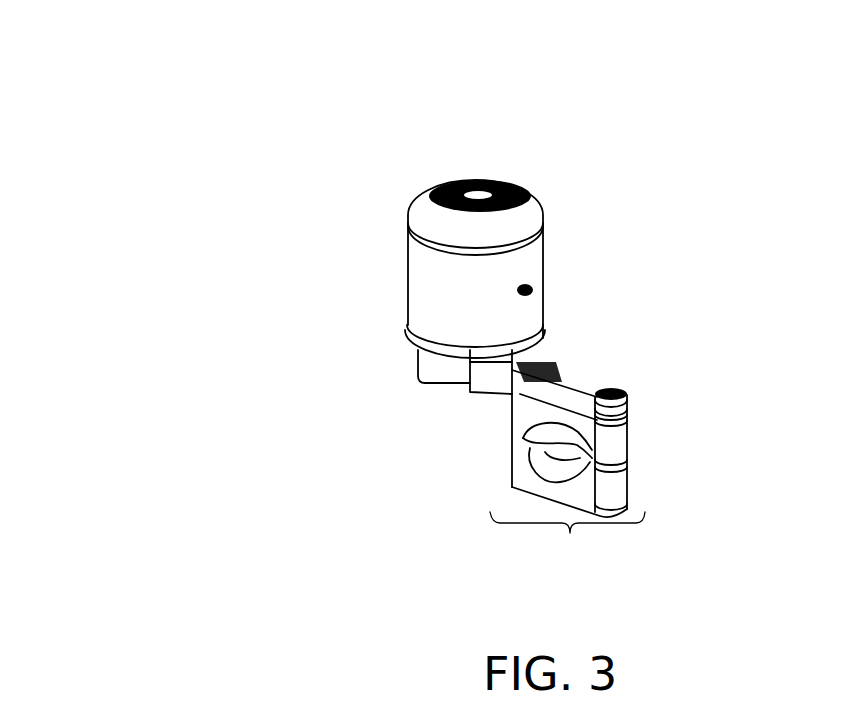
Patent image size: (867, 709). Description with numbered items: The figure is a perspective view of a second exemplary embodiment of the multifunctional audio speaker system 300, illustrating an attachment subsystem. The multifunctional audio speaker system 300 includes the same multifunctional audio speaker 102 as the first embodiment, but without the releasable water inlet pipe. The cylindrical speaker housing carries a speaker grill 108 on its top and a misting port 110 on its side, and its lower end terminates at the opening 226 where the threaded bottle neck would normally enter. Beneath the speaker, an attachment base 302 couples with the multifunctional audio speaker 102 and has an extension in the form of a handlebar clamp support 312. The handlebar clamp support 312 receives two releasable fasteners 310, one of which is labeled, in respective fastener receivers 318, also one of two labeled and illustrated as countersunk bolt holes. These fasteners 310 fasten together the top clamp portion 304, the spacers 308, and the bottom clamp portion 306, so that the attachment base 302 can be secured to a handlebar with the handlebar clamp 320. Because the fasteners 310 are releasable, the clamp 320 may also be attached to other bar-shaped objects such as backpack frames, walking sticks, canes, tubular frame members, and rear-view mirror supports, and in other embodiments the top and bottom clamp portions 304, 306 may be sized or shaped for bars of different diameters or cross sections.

The multifunctional audio speaker system 300 is at (238, 52).
The multifunctional audio speaker 102 is at (348, 250).
The speaker grill 108 is at (460, 183).
The misting port 110 is at (533, 291).
The opening 226 is at (427, 264).
The attachment base 302 is at (463, 375).
The top clamp portion 304 is at (612, 438).
The bottom clamp portion 306 is at (612, 495).
The spacers 308 is at (527, 440).
The releasable fasteners 310 is at (616, 390).
The handlebar clamp support 312 is at (573, 383).
The fastener receivers 318 is at (630, 402).
The handlebar clamp 320 is at (567, 542).